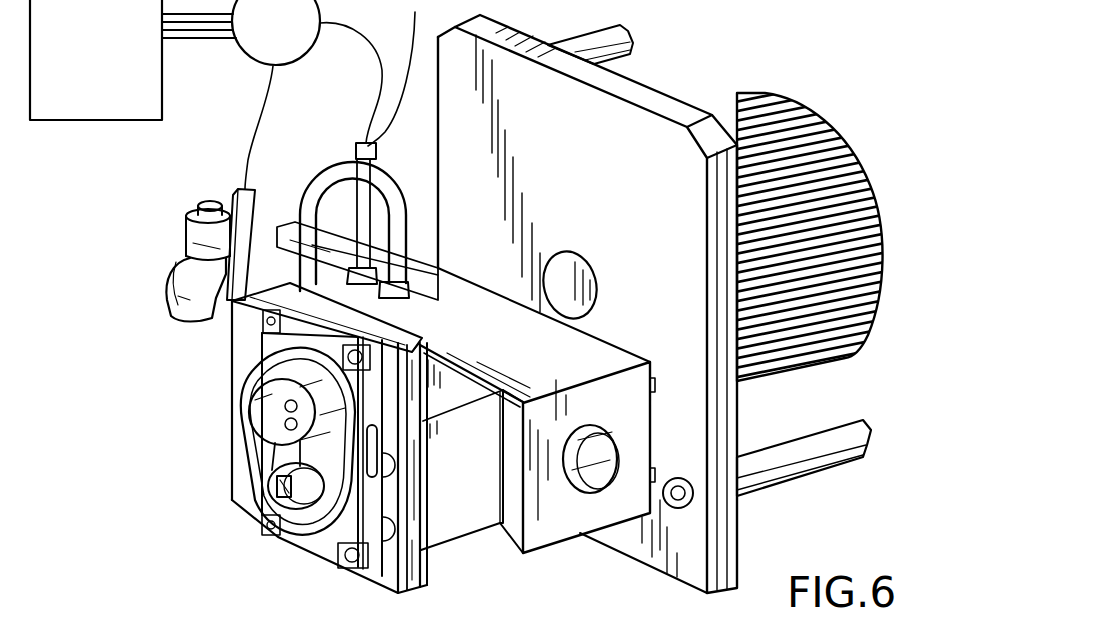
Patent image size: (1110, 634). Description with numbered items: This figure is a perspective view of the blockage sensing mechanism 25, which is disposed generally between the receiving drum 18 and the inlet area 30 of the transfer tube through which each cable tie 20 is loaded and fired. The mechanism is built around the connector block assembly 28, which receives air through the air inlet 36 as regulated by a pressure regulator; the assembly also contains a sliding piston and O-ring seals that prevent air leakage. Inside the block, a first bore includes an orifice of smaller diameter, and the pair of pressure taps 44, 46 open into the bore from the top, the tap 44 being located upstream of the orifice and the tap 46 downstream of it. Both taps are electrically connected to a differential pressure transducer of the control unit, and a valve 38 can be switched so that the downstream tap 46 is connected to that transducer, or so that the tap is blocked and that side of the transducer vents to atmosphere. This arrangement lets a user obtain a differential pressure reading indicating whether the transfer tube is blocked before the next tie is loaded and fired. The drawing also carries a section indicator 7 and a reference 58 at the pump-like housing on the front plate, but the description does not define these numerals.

The receiving drum 18 is at (808, 100).
The cable tie 20 is at (795, 350).
The blockage sensing mechanism 25 is at (162, 180).
The connector block assembly 28 is at (558, 545).
The inlet area 30 is at (214, 462).
The air inlet 36 is at (192, 244).
The valve 38 is at (246, 351).
The pressure tap 44 is at (390, 79).
The pressure tap 46 is at (400, 213).
The drive shaft 58 is at (272, 503).
The section line 7- 7 is at (285, 486).